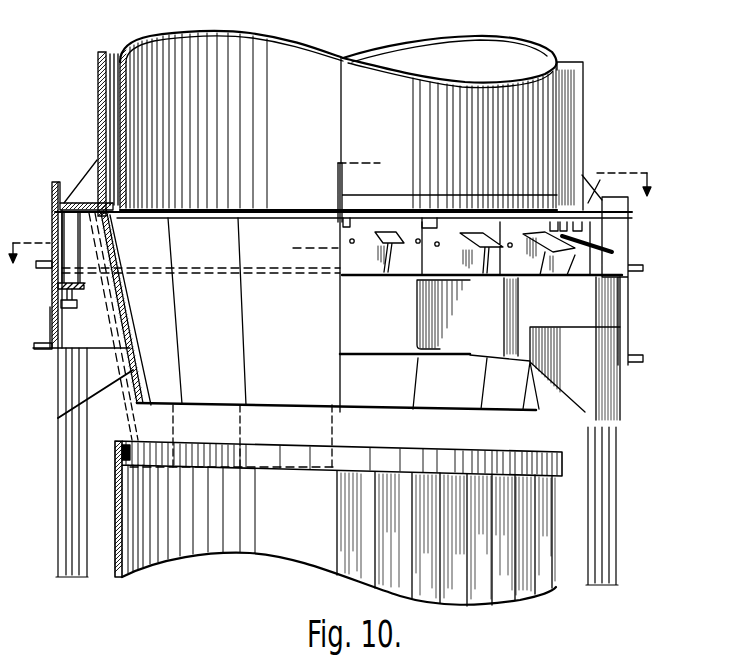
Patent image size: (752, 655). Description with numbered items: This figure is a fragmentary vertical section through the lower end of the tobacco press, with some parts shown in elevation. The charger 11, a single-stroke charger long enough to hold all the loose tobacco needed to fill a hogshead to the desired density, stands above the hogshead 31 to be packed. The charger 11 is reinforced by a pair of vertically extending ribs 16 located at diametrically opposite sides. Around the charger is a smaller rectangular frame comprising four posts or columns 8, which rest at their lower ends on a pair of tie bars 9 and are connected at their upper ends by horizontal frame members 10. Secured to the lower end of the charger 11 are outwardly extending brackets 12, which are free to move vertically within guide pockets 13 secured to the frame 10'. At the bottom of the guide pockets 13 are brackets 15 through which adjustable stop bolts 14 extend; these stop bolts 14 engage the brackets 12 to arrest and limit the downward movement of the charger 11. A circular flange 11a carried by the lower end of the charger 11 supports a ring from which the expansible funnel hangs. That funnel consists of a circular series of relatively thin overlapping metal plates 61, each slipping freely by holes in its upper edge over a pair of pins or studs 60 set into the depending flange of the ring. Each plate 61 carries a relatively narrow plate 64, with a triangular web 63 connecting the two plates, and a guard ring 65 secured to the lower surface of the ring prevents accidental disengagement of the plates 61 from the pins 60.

The posts or columns 8 is at (68, 488).
The tie bars 9 is at (329, 231).
The horizontal frame members 10 is at (518, 348).
The frame 10' is at (269, 344).
The charger 11 is at (303, 53).
The circular flange 11a is at (386, 185).
The brackets 12 is at (87, 184).
The guide pockets 13 is at (52, 200).
The adjustable stop bolts 14 is at (74, 304).
The brackets 15 is at (58, 308).
The vertically extending ribs 16 is at (97, 93).
The hogshead 31 is at (272, 553).
The pins or studs 60 is at (443, 246).
The overlapping metal plates 61 is at (218, 397).
The triangular web 63 is at (477, 265).
The narrow plate 64 is at (382, 238).
The guard ring 65 is at (431, 223).